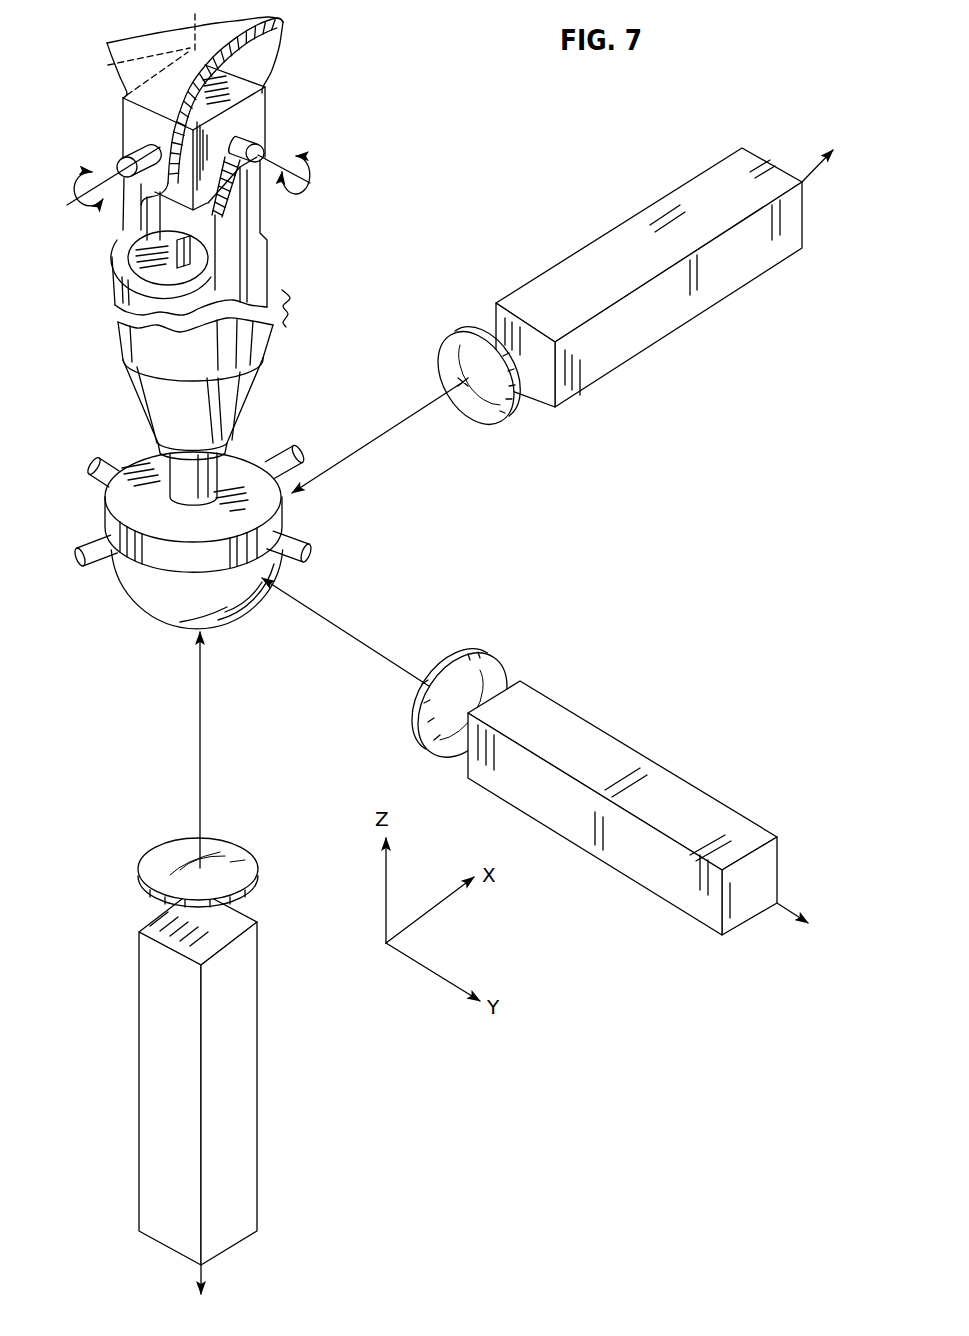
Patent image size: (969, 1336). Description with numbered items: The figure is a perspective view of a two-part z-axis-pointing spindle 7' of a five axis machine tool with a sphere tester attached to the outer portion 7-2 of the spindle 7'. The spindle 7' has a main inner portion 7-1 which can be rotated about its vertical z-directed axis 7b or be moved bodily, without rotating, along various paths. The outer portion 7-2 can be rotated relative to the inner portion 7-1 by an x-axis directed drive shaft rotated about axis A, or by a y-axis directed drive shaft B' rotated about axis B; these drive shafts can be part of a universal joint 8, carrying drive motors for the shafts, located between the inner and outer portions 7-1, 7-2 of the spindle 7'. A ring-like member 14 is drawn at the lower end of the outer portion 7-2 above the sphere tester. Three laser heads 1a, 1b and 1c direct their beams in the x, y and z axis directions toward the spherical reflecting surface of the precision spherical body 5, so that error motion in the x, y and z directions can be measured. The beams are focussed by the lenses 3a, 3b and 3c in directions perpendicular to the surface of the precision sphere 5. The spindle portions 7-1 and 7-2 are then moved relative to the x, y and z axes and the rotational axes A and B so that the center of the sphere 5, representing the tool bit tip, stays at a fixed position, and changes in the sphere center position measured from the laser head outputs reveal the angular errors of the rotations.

The inner portion 7-1 is at (284, 22).
The vertical z-directed axis 7b is at (108, 65).
The spindle 7' is at (410, 92).
The universal joint 8 is at (267, 95).
The y-axis directed drive shaft B' is at (274, 136).
The axis B is at (312, 168).
The axis A is at (120, 160).
The outer portion 7-2 is at (270, 240).
The ring member 14 is at (118, 233).
The precision spherical body 5 is at (147, 617).
The lens 3a is at (497, 413).
The laser head 1a is at (643, 342).
The lens 3b is at (500, 658).
The laser head 1b is at (620, 735).
The laser head 1c is at (258, 1139).
The lens 3c is at (256, 889).